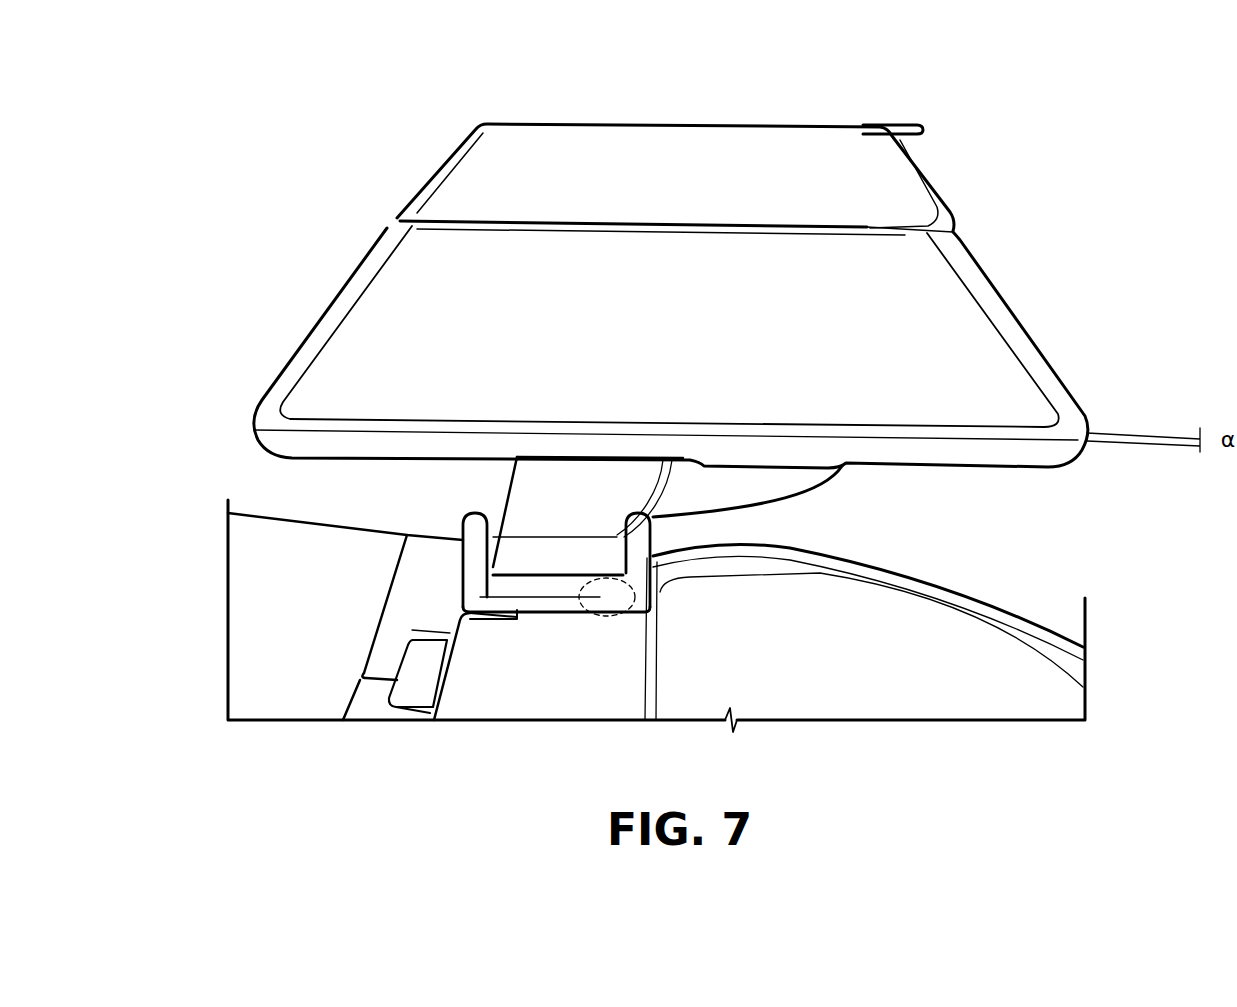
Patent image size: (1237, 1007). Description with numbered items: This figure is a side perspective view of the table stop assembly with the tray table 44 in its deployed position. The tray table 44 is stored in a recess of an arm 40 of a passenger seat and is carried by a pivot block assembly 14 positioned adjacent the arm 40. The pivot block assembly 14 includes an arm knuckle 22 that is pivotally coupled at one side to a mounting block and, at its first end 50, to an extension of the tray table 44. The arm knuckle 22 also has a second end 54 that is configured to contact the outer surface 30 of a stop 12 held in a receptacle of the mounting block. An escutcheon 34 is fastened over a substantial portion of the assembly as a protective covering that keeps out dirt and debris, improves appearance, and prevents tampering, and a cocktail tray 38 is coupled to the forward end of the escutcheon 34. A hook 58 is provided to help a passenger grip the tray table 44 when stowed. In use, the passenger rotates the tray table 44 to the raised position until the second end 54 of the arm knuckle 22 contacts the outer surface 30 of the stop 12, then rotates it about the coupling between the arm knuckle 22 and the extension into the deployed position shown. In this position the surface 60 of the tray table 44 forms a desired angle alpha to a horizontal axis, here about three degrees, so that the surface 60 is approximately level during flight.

The stop 12 is at (605, 617).
The pivot block assembly 14 is at (460, 606).
The arm knuckle 22 is at (498, 608).
The outer surface 30 is at (617, 614).
The escutcheon 34 is at (493, 707).
The cocktail tray 38 is at (940, 620).
The arm 40 is at (342, 583).
The tray table 44 is at (392, 302).
The first end 50 is at (497, 587).
The second end 54 is at (625, 612).
The hook 58 is at (907, 122).
The surface 60 is at (793, 143).